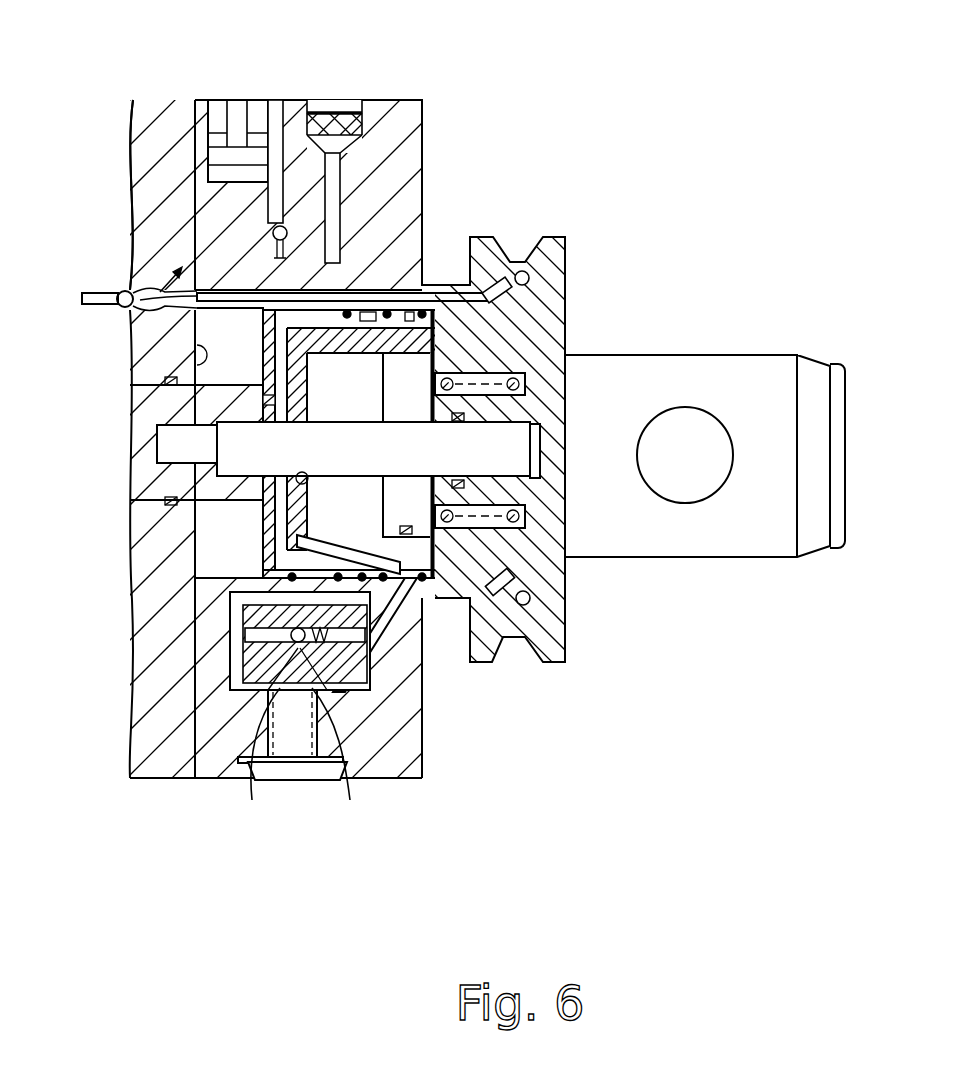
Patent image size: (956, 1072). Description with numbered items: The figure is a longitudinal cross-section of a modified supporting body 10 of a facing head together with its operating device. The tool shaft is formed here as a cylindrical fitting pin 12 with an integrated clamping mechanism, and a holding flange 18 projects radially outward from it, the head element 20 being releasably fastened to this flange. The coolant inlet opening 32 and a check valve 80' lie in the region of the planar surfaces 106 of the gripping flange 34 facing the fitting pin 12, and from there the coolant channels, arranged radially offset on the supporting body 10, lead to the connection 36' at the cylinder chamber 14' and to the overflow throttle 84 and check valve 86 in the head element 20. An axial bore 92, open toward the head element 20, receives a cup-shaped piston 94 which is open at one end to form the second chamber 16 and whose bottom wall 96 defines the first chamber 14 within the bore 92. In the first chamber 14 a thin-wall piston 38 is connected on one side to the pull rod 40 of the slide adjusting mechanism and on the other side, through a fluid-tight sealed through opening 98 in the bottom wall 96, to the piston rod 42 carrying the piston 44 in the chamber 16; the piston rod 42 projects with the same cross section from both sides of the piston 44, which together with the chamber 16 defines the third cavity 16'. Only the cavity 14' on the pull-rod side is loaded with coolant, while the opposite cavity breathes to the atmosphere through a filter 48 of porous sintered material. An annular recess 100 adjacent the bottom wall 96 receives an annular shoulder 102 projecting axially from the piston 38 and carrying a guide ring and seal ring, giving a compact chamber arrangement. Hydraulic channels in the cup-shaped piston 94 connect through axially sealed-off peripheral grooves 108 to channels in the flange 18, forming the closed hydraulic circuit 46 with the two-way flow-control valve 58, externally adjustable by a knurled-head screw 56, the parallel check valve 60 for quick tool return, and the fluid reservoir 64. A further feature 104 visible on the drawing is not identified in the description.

The supporting body 10 is at (445, 600).
The cylindrical fitting pin 12 is at (740, 535).
The piston chamber 14 is at (162, 380).
The first cavity 14' is at (230, 346).
The second chamber 16 is at (289, 453).
The third cavity 16' is at (550, 422).
The holding flange 18 is at (377, 750).
The head element 20 is at (157, 780).
The inlet opening 32 is at (560, 237).
The gripping flange 34 is at (540, 212).
The connection 36' is at (120, 320).
The piston 38 is at (262, 547).
The pull rod 40 is at (170, 480).
The piston rod 42 is at (367, 457).
The piston 44 is at (392, 497).
The closed hydraulic circuit 46 is at (367, 700).
The filter 48 is at (345, 135).
The knurled-head screw 56 is at (290, 783).
The two-way flow-control valve 58 is at (347, 783).
The check valve 60 is at (250, 780).
The fluid reservoir 64 is at (257, 140).
The check valve 80' is at (543, 450).
The overflow throttle 84 is at (130, 273).
The check valve 86 is at (117, 288).
The axial bore 92 is at (200, 560).
The cup-shaped piston 94 is at (360, 393).
The bottom wall 96 is at (263, 515).
The through opening 98 is at (302, 478).
The annular recess 100 is at (335, 290).
The annular shoulder 102 is at (300, 292).
The bore 104 is at (683, 472).
The planar surfaces 106 is at (567, 292).
The peripheral grooves 108 is at (395, 690).